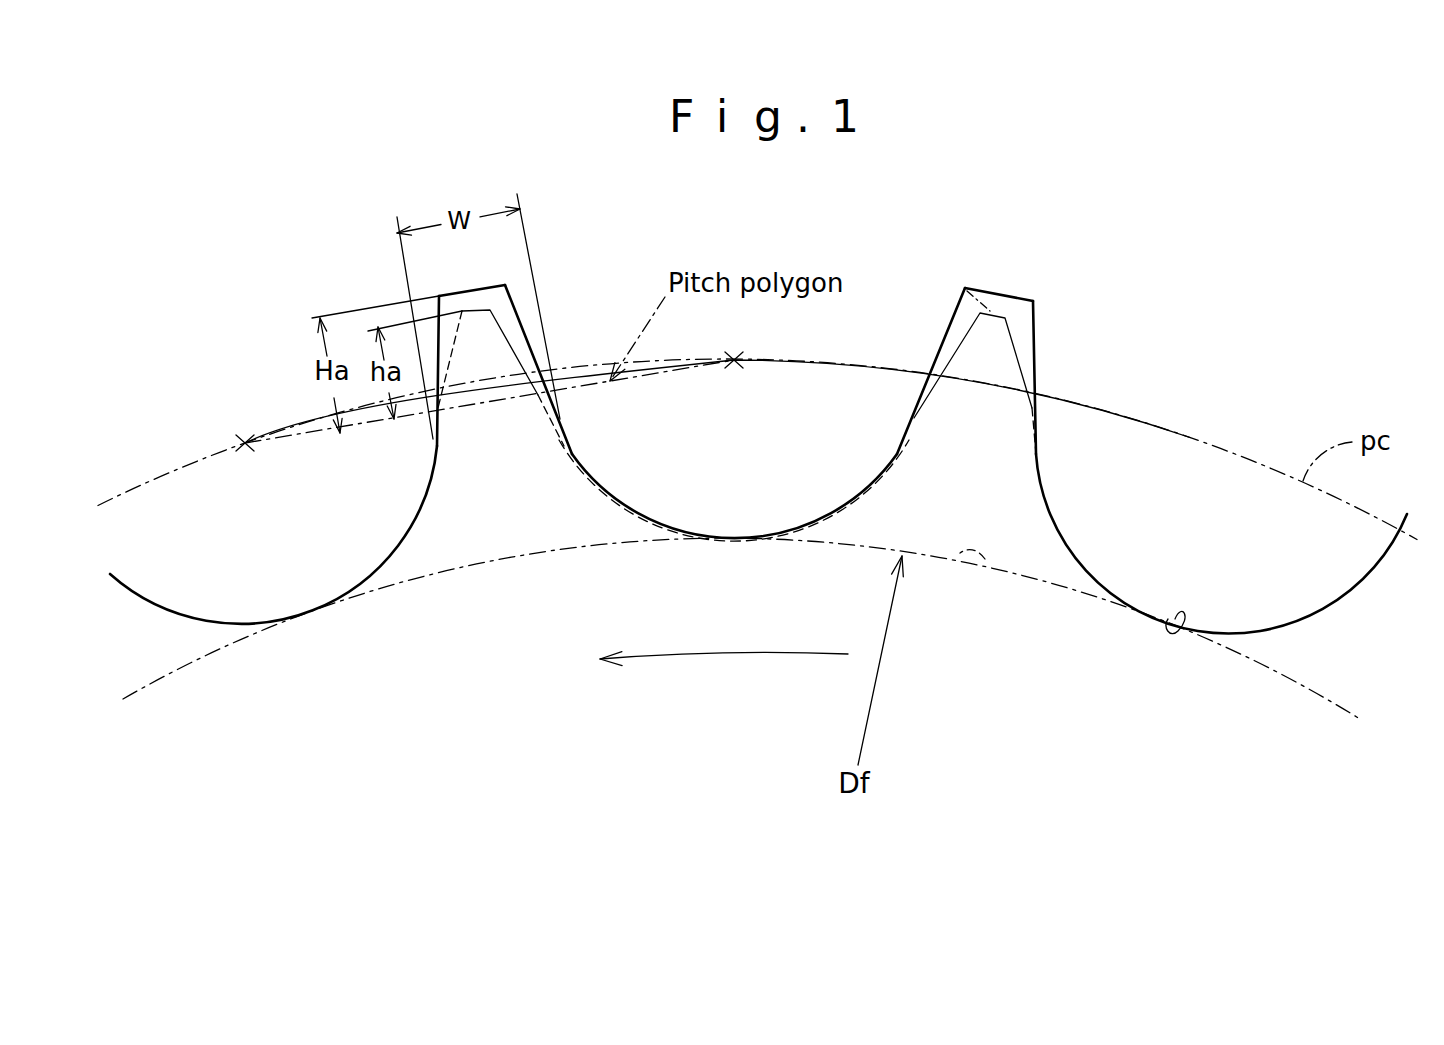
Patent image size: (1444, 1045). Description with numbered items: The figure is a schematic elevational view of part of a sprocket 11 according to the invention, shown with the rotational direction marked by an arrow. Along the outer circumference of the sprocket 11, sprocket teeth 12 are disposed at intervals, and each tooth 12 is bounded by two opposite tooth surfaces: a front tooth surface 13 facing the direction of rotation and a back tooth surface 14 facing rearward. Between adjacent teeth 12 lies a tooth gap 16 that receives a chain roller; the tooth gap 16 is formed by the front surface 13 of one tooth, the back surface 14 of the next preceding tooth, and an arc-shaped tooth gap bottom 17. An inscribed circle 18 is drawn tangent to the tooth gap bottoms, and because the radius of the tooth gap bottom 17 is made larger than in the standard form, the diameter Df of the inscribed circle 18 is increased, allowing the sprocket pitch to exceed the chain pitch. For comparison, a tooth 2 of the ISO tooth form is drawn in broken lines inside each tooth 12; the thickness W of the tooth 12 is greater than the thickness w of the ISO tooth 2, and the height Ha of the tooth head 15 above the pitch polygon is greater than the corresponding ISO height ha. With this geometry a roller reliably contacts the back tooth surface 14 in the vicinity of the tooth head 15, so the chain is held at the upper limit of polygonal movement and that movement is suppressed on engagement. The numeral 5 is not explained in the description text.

The tooth of the ISO tooth form 2 is at (489, 336).
The chamfer at tooth tip corner 5 is at (954, 282).
The sprocket 11 is at (400, 626).
The sprocket tooth 12 is at (499, 298).
The front tooth surface 13 is at (940, 311).
The back tooth surface 14 is at (1032, 333).
The tooth head 15 is at (465, 280).
The tooth gap 16 is at (1184, 508).
The tooth gap bottom 17 is at (1167, 611).
The inscribed circle 18 is at (977, 551).